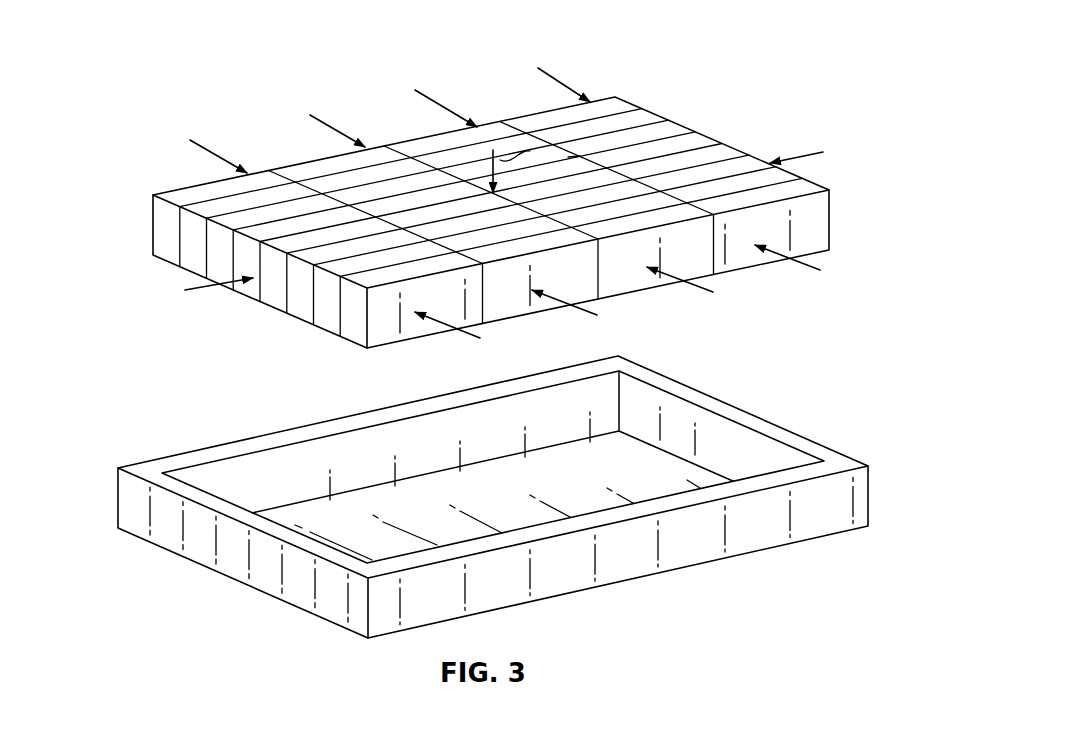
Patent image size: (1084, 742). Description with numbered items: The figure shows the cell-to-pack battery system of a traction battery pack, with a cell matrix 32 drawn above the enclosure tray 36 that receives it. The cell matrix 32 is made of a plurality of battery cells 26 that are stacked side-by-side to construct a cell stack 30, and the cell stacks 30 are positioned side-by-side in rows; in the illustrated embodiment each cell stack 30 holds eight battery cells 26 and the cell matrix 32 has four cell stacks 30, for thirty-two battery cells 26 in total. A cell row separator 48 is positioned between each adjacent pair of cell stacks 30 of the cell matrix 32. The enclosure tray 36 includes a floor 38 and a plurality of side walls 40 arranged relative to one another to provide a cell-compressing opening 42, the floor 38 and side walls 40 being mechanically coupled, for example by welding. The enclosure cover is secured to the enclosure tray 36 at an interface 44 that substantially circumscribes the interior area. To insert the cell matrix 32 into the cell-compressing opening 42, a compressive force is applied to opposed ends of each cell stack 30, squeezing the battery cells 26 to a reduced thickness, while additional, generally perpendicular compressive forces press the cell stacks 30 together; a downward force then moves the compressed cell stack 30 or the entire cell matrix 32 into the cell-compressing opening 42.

The battery cells 26 is at (623, 107).
The cell stack 30 is at (198, 177).
The cell matrix 32 is at (737, 87).
The enclosure tray 36 is at (775, 522).
The floor 38 is at (630, 462).
The side walls 40 is at (140, 460).
The cell-compressing opening 42 is at (655, 487).
The interface 44 is at (245, 512).
The cell row separators 48 is at (283, 177).